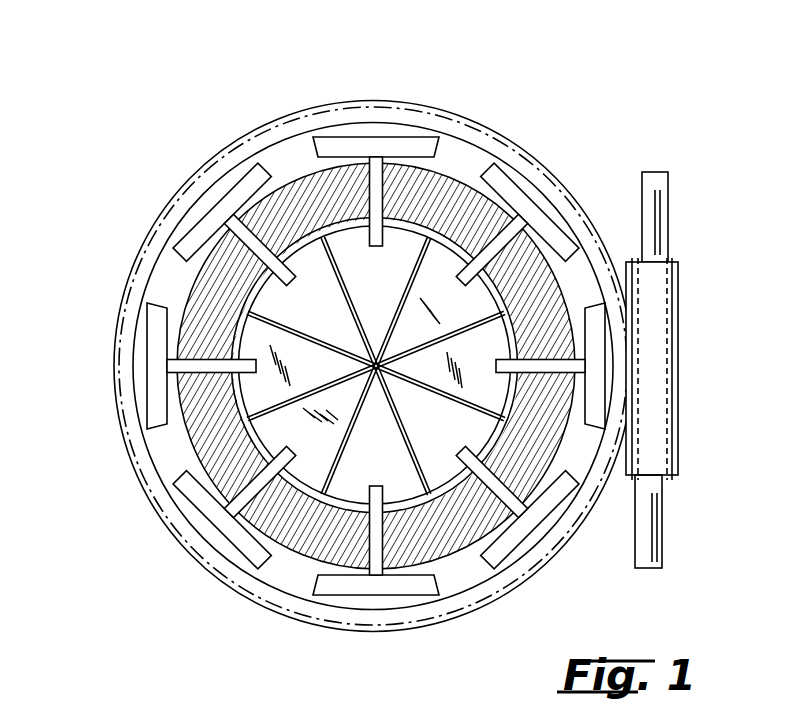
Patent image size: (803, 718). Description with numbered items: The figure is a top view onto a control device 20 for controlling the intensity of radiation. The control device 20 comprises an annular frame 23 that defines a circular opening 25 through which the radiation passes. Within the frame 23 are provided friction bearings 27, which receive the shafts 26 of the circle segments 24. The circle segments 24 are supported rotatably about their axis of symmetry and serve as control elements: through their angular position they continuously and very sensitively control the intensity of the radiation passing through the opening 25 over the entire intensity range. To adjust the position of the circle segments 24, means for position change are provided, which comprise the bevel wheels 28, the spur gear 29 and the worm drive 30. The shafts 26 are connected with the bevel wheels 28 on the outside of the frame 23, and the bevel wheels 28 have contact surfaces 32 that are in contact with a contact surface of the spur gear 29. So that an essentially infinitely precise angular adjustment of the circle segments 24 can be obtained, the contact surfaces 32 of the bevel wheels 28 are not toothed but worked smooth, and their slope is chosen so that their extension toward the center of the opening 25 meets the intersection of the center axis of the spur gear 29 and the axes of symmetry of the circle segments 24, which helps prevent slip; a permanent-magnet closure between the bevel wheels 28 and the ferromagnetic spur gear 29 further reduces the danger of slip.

The control device 20 is at (570, 52).
The annular frame 23 is at (450, 185).
The circle segments 24 is at (313, 257).
The circular opening 25 is at (495, 205).
The shafts 26 is at (255, 248).
The friction bearings 27 is at (180, 395).
The bevel wheels 28 is at (362, 147).
The spur gear 29 is at (232, 572).
The worm drive 30 is at (655, 371).
The contact surfaces 32 is at (193, 486).